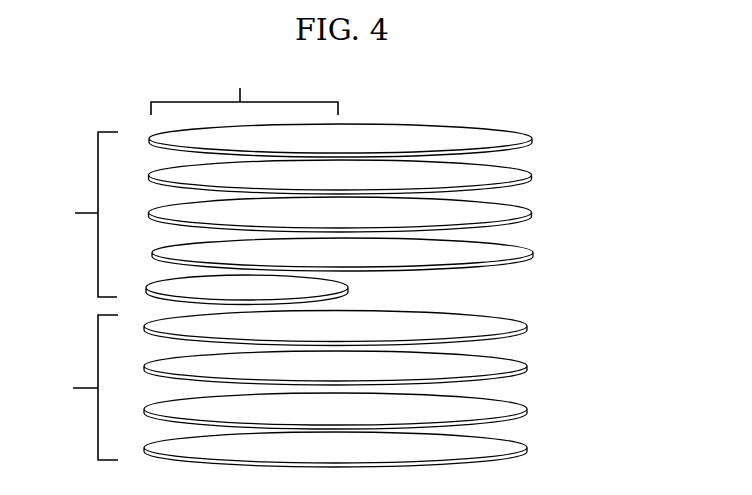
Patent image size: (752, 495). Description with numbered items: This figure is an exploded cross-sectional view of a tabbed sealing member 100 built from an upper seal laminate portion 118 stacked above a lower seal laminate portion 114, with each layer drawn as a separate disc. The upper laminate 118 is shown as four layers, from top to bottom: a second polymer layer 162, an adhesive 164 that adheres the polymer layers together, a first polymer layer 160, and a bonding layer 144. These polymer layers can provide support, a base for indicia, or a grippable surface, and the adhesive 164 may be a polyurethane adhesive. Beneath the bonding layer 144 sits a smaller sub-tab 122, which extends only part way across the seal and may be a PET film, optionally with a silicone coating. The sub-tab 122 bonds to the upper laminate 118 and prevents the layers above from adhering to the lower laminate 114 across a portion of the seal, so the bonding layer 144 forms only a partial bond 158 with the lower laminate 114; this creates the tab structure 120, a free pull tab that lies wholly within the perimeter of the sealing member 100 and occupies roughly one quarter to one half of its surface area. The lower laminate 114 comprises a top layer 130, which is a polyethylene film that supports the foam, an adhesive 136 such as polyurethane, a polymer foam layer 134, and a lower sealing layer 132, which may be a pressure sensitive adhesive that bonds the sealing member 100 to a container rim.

The tabbed sealing member 100 is at (509, 87).
The tab structure 120 is at (244, 87).
The upper seal laminate portion 118 is at (335, 208).
The lower seal laminate portion 114 is at (333, 386).
The sub-tab 122 is at (146, 288).
The partial bond 158 is at (437, 273).
The second polymer layer 162 is at (532, 139).
The adhesive 164 is at (532, 176).
The first polymer layer 160 is at (532, 213).
The bonding layer 144 is at (534, 254).
The top layer 130 is at (527, 327).
The adhesive 136 is at (527, 367).
The polymer foam layer 134 is at (527, 409).
The lower sealing layer 132 is at (527, 448).